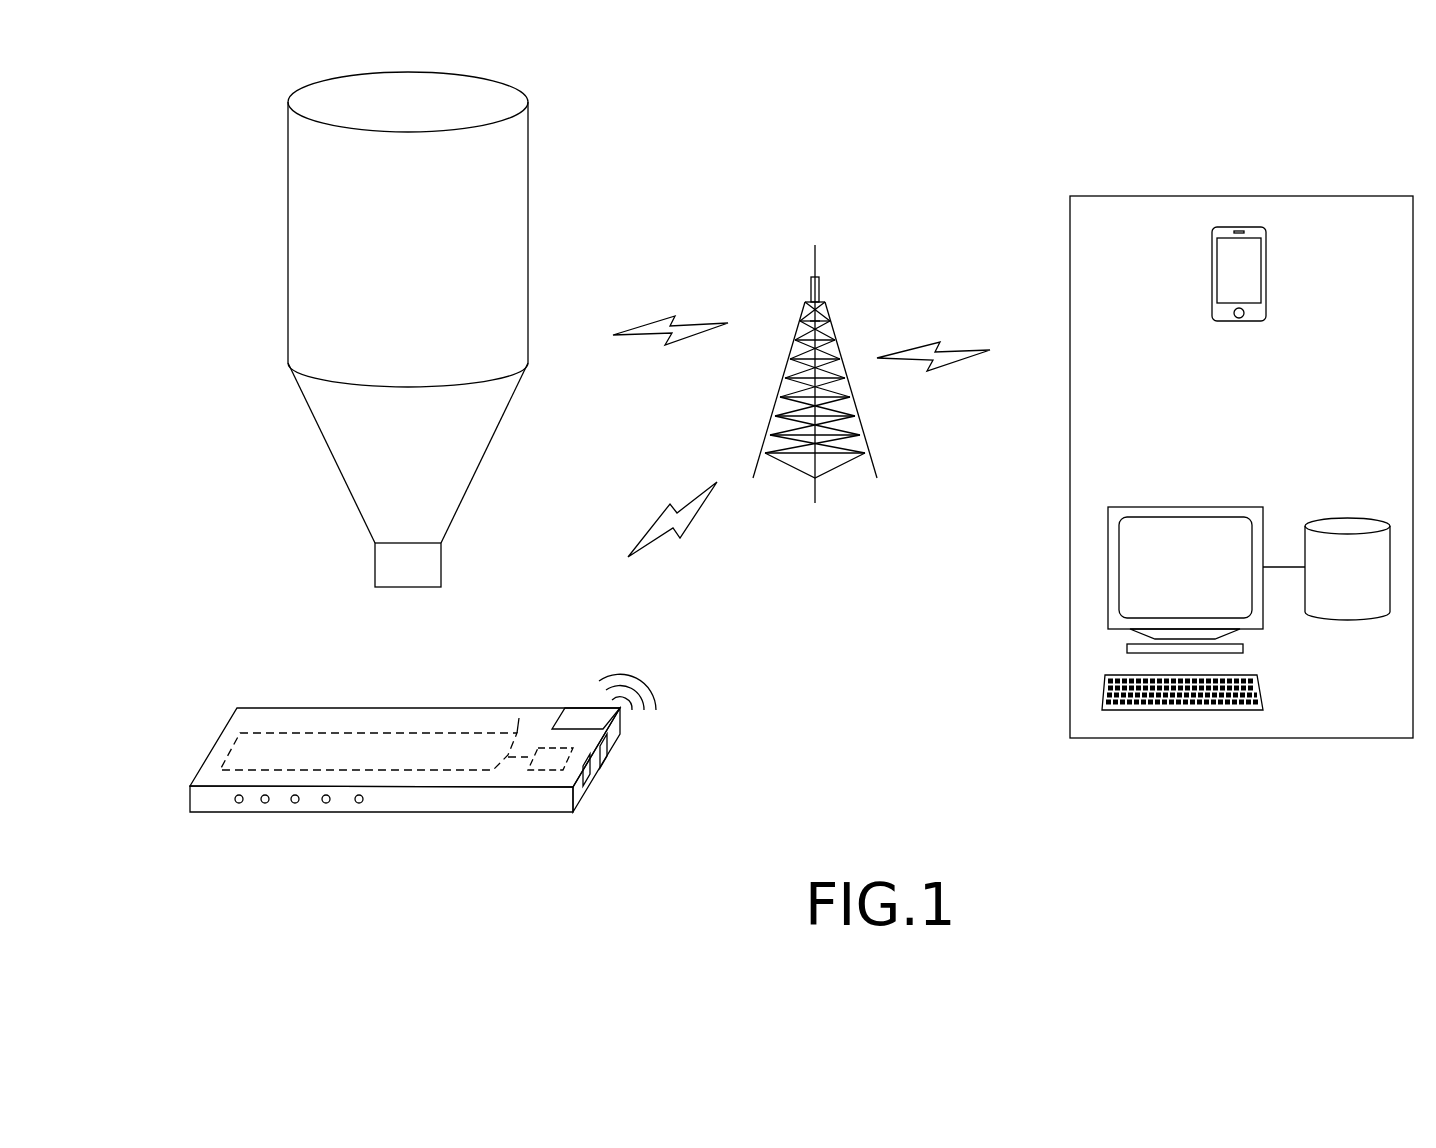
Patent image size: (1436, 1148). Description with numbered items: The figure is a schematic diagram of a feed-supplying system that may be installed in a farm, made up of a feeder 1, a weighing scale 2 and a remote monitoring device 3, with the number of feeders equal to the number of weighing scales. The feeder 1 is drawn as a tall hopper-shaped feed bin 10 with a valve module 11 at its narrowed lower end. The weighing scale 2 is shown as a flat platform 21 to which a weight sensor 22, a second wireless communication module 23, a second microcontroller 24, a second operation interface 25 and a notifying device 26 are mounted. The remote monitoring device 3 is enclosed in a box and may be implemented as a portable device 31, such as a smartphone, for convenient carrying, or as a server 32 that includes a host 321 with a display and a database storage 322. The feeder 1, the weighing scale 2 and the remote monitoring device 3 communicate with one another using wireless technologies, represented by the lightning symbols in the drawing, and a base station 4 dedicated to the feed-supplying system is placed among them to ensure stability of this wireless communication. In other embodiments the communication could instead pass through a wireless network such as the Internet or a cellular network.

The feeder 1 is at (585, 133).
The feed bin 10 is at (528, 244).
The valve module 11 is at (375, 567).
The weighing scale 2 is at (233, 674).
The platform 21 is at (519, 718).
The weight sensor 22 is at (425, 743).
The second wireless communication module 23 is at (583, 718).
The second microcontroller 24 is at (557, 777).
The second operation interface 25 is at (447, 806).
The notifying device 26 is at (597, 760).
The remote monitoring device 3 is at (1035, 610).
The portable device 31 is at (1246, 228).
The server 32 is at (1300, 708).
The host 321 is at (1185, 507).
The database storage 322 is at (1343, 608).
The base station 4 is at (878, 240).